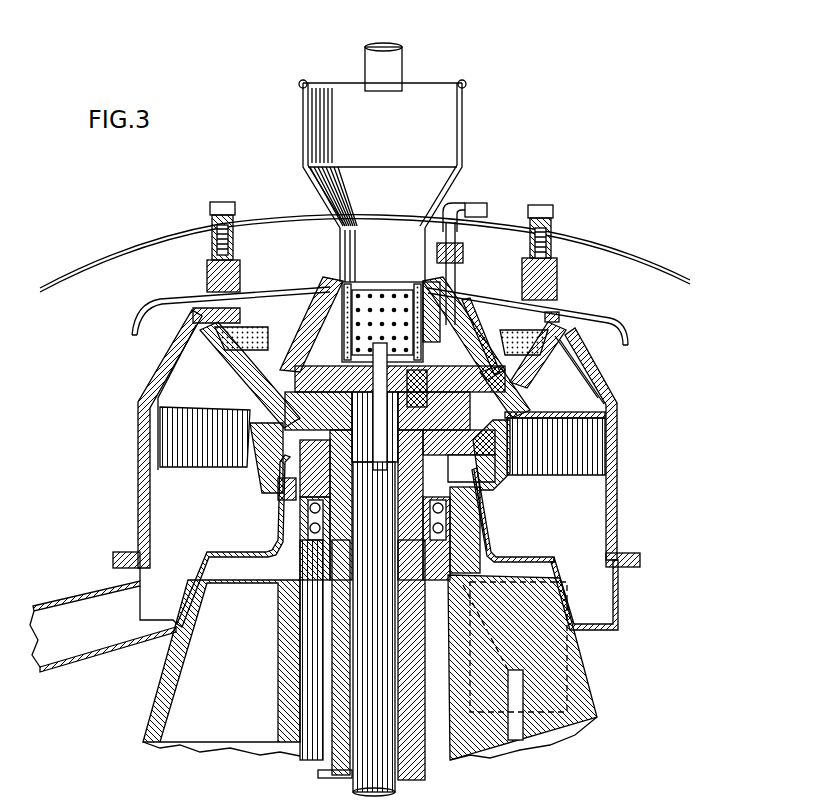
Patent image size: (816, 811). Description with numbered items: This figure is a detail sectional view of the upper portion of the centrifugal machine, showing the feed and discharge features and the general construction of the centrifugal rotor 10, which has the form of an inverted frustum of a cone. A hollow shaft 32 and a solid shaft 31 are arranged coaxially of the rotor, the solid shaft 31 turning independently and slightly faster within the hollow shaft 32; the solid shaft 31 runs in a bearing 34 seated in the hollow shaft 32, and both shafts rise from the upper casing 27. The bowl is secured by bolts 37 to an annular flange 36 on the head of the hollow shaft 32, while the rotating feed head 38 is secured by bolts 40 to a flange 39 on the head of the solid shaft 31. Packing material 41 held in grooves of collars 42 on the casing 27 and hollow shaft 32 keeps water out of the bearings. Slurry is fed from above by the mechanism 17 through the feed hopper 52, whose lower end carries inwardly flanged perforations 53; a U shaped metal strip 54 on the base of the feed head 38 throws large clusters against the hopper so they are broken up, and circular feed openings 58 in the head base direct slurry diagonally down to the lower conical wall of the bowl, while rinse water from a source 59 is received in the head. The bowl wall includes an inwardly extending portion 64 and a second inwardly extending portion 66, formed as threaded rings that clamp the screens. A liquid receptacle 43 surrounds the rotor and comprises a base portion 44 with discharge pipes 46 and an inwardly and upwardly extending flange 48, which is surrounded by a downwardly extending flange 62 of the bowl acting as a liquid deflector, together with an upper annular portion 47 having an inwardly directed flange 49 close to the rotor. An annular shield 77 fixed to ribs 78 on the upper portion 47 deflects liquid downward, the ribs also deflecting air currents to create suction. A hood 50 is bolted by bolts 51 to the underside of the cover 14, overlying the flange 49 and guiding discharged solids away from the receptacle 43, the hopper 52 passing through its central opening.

The feed hopper 52 is at (464, 96).
The perforations 53 is at (336, 224).
The cover 14 is at (674, 277).
The bolts 51 is at (214, 208).
The hood 50 is at (162, 302).
The feed mechanism 17 is at (446, 212).
The rinse water source 59 is at (457, 282).
The U shaped metal strip 54 is at (408, 284).
The bolts 40 is at (488, 350).
The feed openings 58 is at (478, 318).
The rotating feed head 38 is at (538, 346).
The second inwardly extending portion 66 is at (560, 321).
The inwardly directed flange 49 is at (596, 358).
The annular shield 77 is at (604, 396).
The inwardly extending portion 64 is at (530, 386).
The flange 39 is at (590, 413).
The ribs 78 is at (585, 480).
The centrifugal rotor 10 is at (234, 388).
The bolts 37 is at (250, 478).
The collars 42 is at (262, 503).
The packing material 41 is at (273, 530).
The annular flange 36 is at (453, 460).
The annular downwardly extending flange 62 is at (510, 494).
The bearing 34 is at (486, 508).
The annular flange 48 is at (490, 538).
The base portion 44 is at (619, 604).
The upper annular portion 47 is at (617, 466).
The liquid receptacle 43 is at (622, 556).
The discharge pipes 46 is at (73, 600).
The hollow shaft 32 is at (300, 638).
The upper casing 27 is at (579, 673).
The solid shaft 31 is at (358, 792).